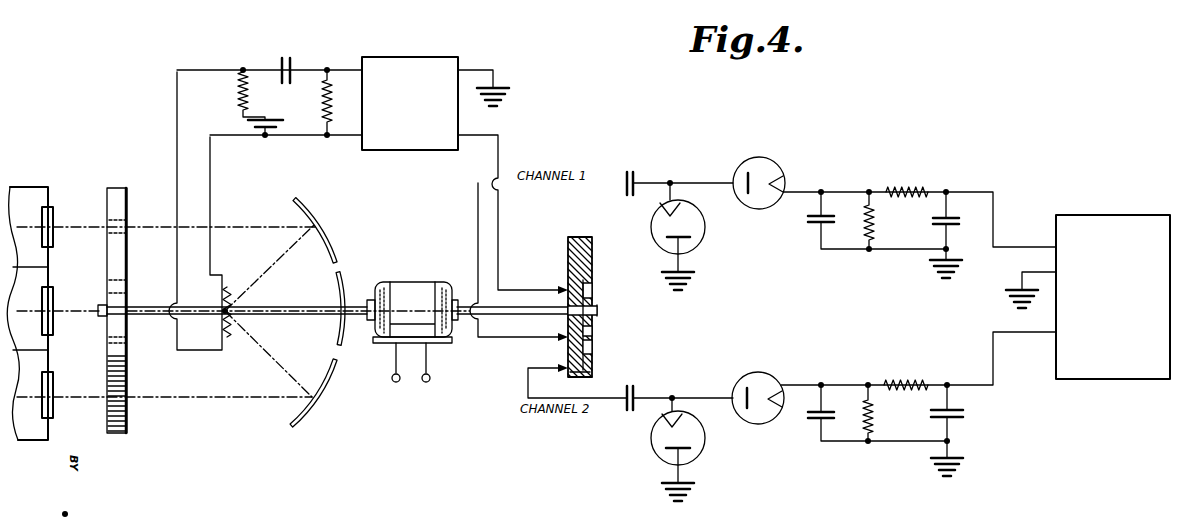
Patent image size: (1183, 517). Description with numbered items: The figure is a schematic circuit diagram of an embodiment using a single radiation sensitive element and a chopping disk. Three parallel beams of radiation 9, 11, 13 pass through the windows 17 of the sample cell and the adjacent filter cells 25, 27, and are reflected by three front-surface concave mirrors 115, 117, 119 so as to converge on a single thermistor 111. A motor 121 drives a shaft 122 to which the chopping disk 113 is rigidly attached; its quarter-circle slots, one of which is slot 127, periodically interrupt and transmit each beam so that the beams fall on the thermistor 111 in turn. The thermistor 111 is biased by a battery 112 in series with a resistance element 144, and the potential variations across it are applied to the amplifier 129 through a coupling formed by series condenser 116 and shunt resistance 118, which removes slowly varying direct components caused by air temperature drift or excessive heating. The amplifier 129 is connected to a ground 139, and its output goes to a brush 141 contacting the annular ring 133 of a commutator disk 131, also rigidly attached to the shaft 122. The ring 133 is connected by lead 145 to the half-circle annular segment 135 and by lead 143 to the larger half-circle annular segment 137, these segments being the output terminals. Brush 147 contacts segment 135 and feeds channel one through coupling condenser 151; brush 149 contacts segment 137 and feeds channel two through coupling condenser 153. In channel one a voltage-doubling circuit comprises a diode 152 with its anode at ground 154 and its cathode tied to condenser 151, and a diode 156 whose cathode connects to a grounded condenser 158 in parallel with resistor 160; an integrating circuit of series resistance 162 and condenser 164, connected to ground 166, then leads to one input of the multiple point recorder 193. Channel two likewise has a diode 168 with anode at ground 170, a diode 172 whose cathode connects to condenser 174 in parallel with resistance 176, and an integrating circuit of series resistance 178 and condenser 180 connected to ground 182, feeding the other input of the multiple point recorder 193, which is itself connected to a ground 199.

The beam of radiation 9 is at (76, 232).
The beam of radiation 11 is at (68, 318).
The beam of radiation 13 is at (70, 403).
The window 17 is at (54, 212).
The filter cell 25 is at (50, 267).
The filter cell 27 is at (50, 350).
The thermistor 111 is at (229, 338).
The battery 112 is at (276, 130).
The chopping disk 113 is at (127, 425).
The front-surface concave mirror 115 is at (338, 240).
The series condenser 116 is at (280, 60).
The front-surface concave mirror 117 is at (342, 283).
The shunt resistance 118 is at (320, 100).
The front-surface concave mirror 119 is at (300, 420).
The motor 121 is at (418, 286).
The shaft 122 is at (268, 320).
The slot 127 is at (118, 330).
The amplifier 129 is at (418, 57).
The commutator disk 131 is at (592, 240).
The annular ring 133 is at (592, 290).
The half-circle annular segment 135 is at (568, 345).
The half-circle annular segment 137 is at (578, 377).
The ground 139 is at (500, 88).
The brush 141 is at (560, 288).
The lead 143 is at (592, 348).
The resistance element 144 is at (238, 88).
The lead 145 is at (592, 333).
The brush 147 is at (560, 334).
The brush 149 is at (560, 372).
The coupling condenser 151 is at (637, 175).
The diode 152 is at (651, 218).
The coupling condenser 153 is at (630, 387).
The ground 154 is at (694, 275).
The diode 156 is at (755, 209).
The condenser 158 is at (812, 228).
The resistor 160 is at (876, 226).
The series resistance 162 is at (895, 187).
The condenser 164 is at (950, 226).
The ground 166 is at (936, 279).
The diode 168 is at (652, 455).
The ground 170 is at (694, 486).
The diode 172 is at (736, 380).
The condenser 174 is at (812, 425).
The resistance 176 is at (874, 414).
The series resistance 178 is at (900, 378).
The condenser 180 is at (960, 427).
The ground 182 is at (962, 473).
The multiple point recorder 193 is at (1095, 215).
The ground 199 is at (1012, 305).